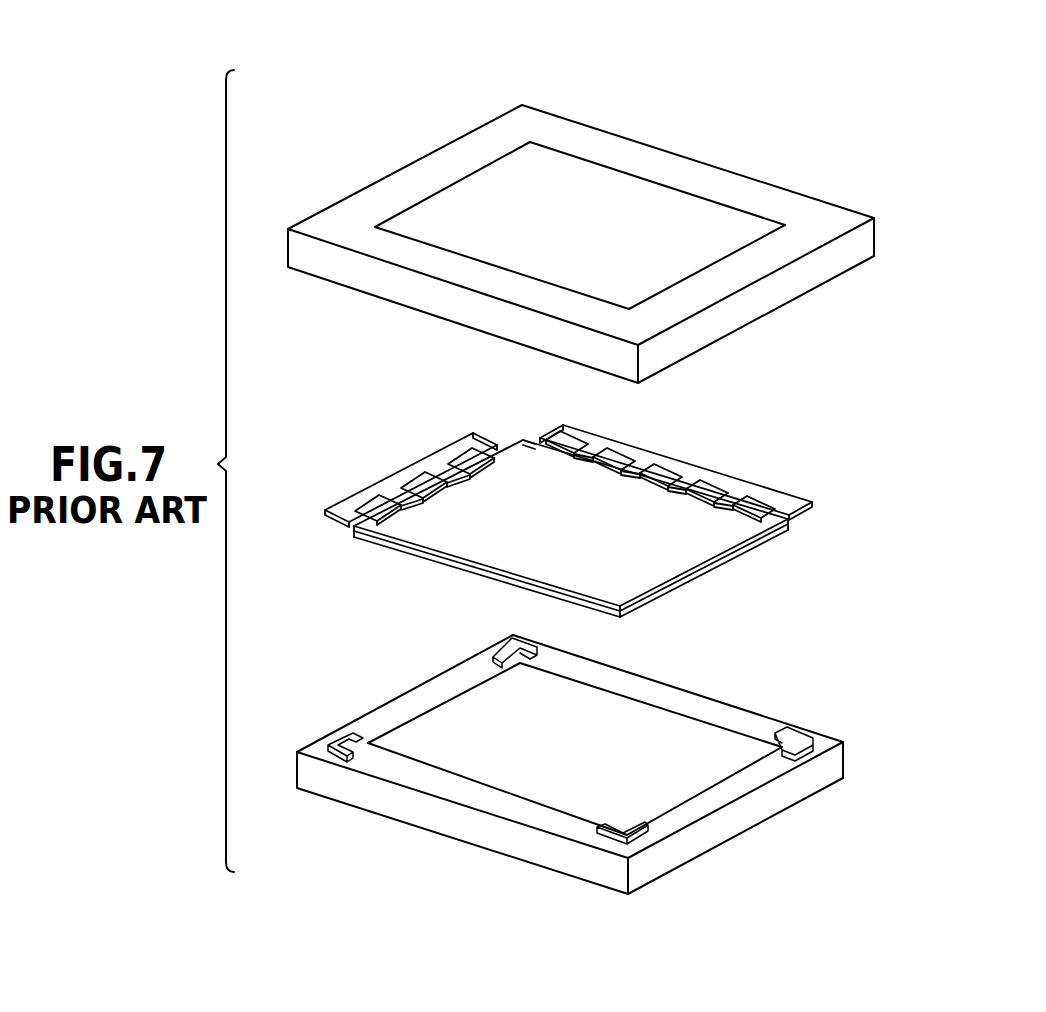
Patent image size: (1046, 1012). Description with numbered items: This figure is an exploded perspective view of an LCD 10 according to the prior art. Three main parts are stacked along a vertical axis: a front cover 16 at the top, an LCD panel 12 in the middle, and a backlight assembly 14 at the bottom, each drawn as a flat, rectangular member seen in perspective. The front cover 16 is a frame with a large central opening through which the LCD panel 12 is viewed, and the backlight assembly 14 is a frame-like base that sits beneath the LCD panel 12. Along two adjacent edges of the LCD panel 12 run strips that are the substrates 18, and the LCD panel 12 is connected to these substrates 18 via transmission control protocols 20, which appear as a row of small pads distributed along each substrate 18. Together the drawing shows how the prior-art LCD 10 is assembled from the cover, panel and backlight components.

The LCD 10 is at (670, 93).
The LCD panel 12 is at (600, 545).
The backlight assembly 14 is at (445, 818).
The front cover 16 is at (765, 183).
The substrates 18 is at (430, 462).
The transmission control protocols (TCPs) 20 is at (421, 488).